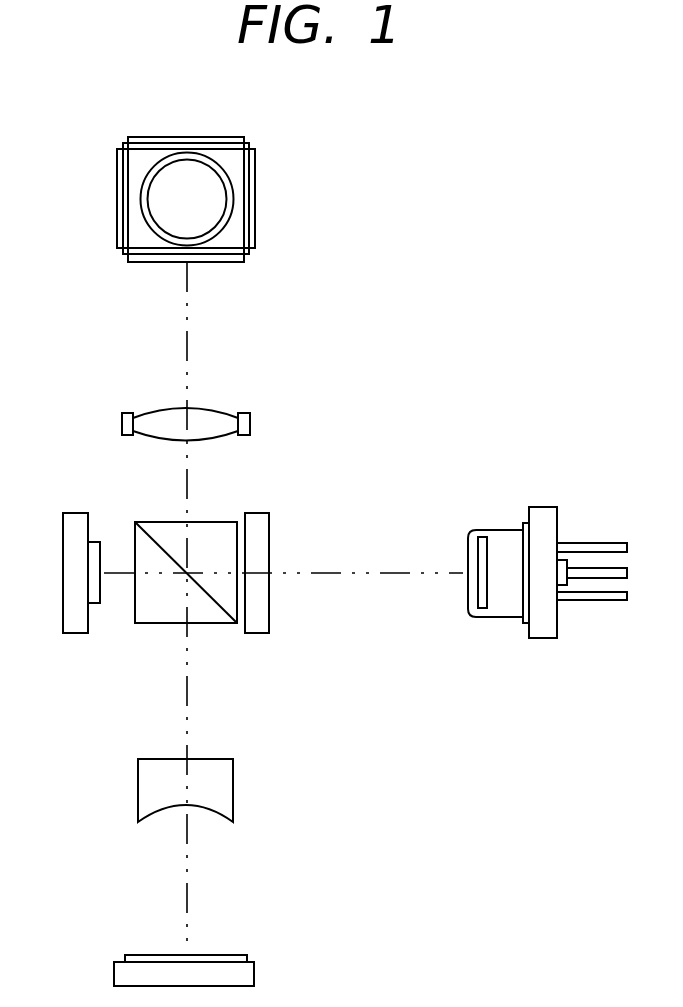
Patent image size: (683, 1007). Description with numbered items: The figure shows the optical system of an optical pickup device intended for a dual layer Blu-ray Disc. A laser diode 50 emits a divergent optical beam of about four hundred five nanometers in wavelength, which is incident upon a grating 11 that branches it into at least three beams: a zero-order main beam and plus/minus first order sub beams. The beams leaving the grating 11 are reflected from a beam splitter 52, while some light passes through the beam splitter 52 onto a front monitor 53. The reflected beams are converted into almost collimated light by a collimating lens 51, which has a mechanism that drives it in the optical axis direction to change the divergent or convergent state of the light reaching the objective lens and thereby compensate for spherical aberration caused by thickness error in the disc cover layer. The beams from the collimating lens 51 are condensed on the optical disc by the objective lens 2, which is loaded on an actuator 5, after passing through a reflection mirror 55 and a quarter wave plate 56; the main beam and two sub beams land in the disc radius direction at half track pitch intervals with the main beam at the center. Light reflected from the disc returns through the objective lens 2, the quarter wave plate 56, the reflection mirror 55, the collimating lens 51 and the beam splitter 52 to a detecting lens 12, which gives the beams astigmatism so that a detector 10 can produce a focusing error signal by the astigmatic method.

The objective lens 2 is at (200, 186).
The actuator 5 is at (137, 169).
The detector 10 is at (252, 960).
The grating 11 is at (257, 513).
The detecting lens 12 is at (217, 759).
The laser diode 50 is at (500, 528).
The collimating lens 51 is at (217, 410).
The beam splitter 52 is at (208, 625).
The front monitor 53 is at (72, 613).
The reflection mirror 55 is at (137, 259).
The quarter wave plate 56 is at (255, 238).